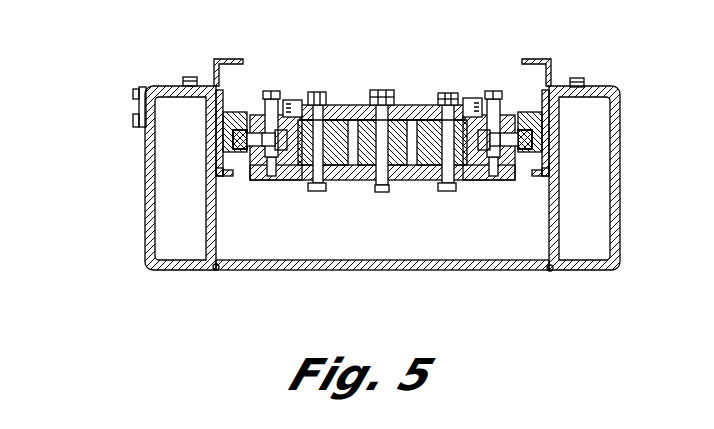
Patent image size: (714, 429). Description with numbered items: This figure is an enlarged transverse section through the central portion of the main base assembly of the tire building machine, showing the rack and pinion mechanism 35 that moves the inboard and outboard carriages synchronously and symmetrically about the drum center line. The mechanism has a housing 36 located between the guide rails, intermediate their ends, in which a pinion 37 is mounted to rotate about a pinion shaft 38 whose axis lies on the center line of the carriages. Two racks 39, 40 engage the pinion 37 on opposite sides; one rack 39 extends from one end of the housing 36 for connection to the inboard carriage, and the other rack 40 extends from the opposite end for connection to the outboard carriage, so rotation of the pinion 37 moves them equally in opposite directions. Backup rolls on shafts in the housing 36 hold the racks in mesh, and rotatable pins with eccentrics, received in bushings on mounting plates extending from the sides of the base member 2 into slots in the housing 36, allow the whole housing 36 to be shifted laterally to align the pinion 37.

The base member 2 is at (146, 207).
The rack and pinion mechanism 35 is at (333, 95).
The housing 36 is at (413, 106).
The pinion 37 is at (389, 187).
The pinion shaft 38 is at (368, 103).
The rack 39 is at (449, 192).
The rack 40 is at (330, 186).